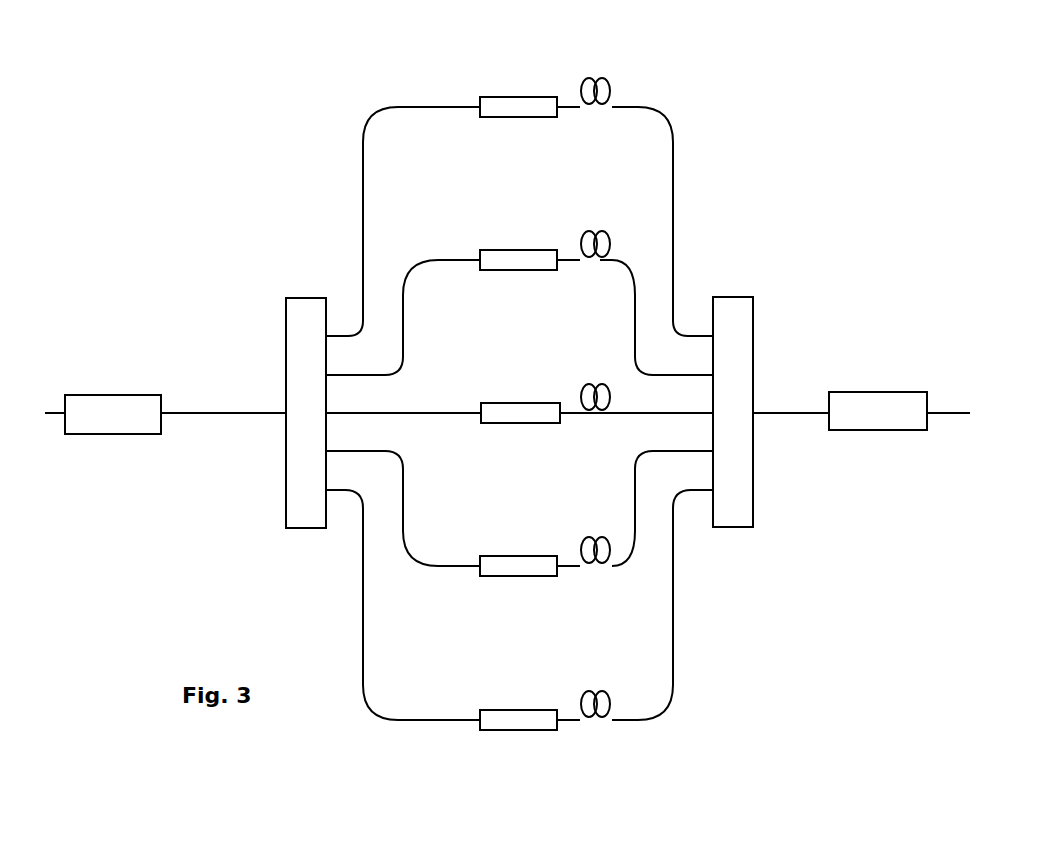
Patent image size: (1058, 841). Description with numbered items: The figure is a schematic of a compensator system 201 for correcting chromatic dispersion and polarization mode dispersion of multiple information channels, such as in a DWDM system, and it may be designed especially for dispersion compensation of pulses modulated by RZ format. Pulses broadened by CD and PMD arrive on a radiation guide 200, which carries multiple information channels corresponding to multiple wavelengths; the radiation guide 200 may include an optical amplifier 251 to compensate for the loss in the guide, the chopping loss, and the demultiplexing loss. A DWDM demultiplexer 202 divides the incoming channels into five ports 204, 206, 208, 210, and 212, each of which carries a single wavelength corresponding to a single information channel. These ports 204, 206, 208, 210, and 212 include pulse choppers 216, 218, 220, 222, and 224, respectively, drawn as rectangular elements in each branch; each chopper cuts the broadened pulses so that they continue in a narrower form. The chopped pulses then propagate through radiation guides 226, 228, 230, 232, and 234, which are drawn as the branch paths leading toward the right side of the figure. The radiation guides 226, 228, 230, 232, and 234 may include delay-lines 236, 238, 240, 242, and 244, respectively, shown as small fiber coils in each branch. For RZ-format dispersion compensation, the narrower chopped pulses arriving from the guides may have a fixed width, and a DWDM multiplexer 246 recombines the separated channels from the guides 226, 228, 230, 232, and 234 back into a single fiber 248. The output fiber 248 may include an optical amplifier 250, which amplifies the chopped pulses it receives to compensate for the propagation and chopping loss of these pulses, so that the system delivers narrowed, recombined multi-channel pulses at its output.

The compensator system 201 is at (708, 178).
The radiation guide 200 is at (250, 412).
The optical amplifier 251 is at (108, 400).
The DWDM demultiplexer 202 is at (306, 298).
The port 204 is at (364, 260).
The port 206 is at (404, 338).
The port 208 is at (452, 412).
The port 210 is at (404, 490).
The port 212 is at (364, 612).
The pulse chopper 216 is at (522, 97).
The pulse chopper 218 is at (522, 250).
The pulse chopper 220 is at (525, 403).
The pulse chopper 222 is at (525, 557).
The pulse chopper 224 is at (525, 710).
The delay-line 236 is at (604, 78).
The delay-line 238 is at (604, 230).
The delay-line 240 is at (605, 384).
The delay-line 242 is at (604, 538).
The delay-line 244 is at (604, 690).
The radiation guide 226 is at (674, 238).
The radiation guide 228 is at (634, 330).
The radiation guide 230 is at (697, 411).
The radiation guide 232 is at (634, 480).
The radiation guide 234 is at (674, 583).
The DWDM multiplexer 246 is at (750, 297).
The single fiber 248 is at (808, 411).
The optical amplifier 250 is at (890, 405).